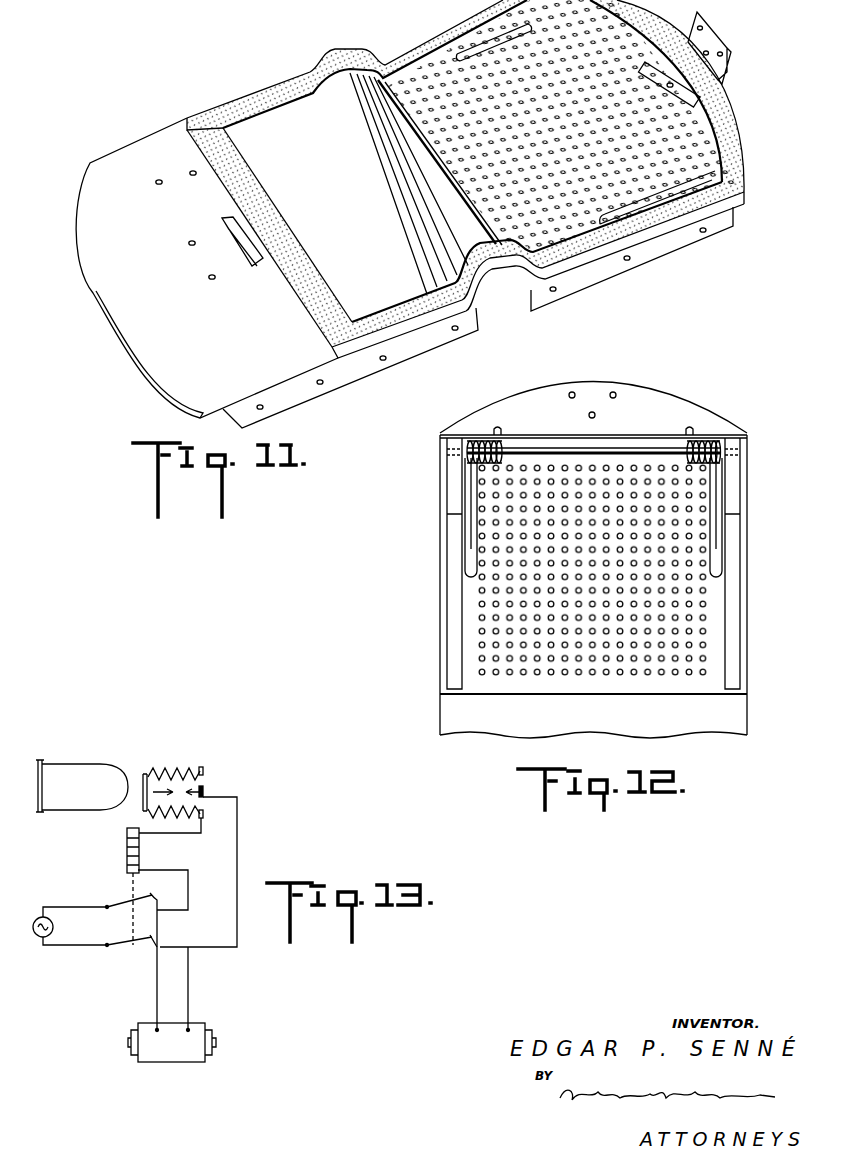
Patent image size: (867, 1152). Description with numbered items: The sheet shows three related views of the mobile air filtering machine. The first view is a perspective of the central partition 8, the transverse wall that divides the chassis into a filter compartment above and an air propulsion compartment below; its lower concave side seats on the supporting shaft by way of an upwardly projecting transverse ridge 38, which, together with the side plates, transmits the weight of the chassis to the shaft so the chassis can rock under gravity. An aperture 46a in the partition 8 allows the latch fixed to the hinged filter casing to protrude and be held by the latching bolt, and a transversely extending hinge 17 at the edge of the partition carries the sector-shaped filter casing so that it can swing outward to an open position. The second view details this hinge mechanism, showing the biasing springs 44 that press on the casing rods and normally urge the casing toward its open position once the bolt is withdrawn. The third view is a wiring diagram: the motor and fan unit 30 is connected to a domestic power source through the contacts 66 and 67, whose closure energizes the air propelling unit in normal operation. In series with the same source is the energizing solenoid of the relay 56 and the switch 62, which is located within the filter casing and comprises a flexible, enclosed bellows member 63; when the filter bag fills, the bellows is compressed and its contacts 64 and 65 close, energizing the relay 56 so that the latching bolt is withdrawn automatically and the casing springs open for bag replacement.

In FIG. 11, the partition 8 is at (229, 368).
In FIG. 11, the hinge 17 is at (728, 76).
In FIG. 11, the transverse ridge 38 is at (437, 220).
In FIG. 11, the aperture 46a is at (248, 254).
In FIG. 12, the biasing springs 44 is at (478, 445).
In FIG. 13, the motor and fan unit 30 is at (168, 1052).
In FIG. 13, the relay 56 is at (125, 850).
In FIG. 13, the switch 62 is at (146, 790).
In FIG. 13, the bellows member 63 is at (167, 770).
In FIG. 13, the switch contact 64 is at (160, 788).
In FIG. 13, the switch contact 65 is at (202, 788).
In FIG. 13, the switch contact 66 is at (152, 943).
In FIG. 13, the switch contact 67 is at (153, 903).